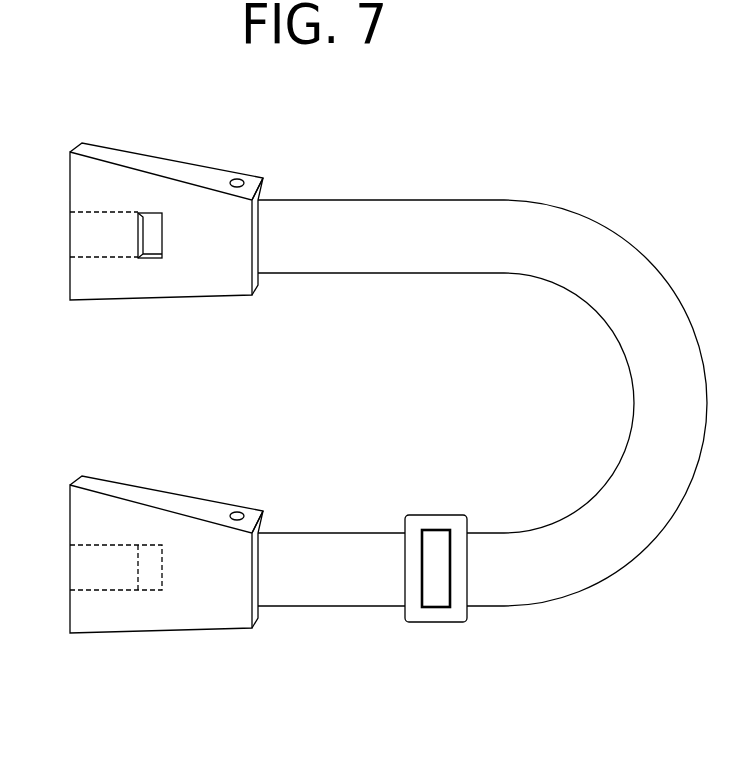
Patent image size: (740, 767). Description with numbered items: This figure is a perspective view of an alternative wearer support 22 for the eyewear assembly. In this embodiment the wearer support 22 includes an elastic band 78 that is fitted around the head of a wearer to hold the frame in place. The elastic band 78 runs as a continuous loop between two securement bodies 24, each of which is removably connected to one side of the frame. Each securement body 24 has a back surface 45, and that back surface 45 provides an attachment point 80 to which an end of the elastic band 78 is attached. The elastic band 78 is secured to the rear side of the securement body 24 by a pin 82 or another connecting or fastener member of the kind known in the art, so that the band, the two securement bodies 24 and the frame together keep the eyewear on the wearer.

The wearer support 22 is at (482, 431).
The securement body 24 is at (197, 404).
The back surface 45 is at (263, 192).
The elastic band 78 is at (348, 200).
The attachment point 80 is at (233, 283).
The pin 82 is at (242, 180).